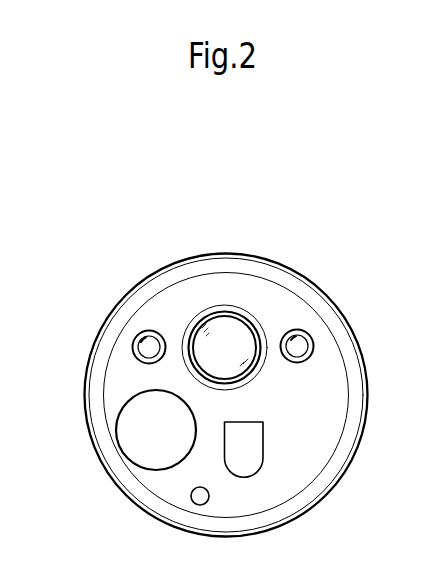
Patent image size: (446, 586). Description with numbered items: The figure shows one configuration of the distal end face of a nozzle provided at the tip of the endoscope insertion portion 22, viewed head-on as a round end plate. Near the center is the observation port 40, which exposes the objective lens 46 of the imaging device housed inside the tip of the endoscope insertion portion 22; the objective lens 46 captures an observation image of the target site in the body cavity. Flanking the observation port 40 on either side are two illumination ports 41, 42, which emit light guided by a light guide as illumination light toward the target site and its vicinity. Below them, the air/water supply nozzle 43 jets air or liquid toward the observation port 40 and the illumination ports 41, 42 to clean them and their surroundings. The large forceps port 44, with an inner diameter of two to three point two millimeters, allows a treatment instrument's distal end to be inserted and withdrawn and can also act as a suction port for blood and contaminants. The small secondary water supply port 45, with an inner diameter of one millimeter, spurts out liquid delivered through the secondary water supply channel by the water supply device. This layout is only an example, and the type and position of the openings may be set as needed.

The endoscope insertion portion 22 is at (270, 272).
The observation port 40 is at (227, 316).
The objective lens 46 is at (238, 333).
The illumination port 41 is at (134, 347).
The illumination port 42 is at (313, 346).
The air/water supply nozzle 43 is at (258, 440).
The forceps port 44 is at (150, 470).
The secondary water supply port 45 is at (191, 496).